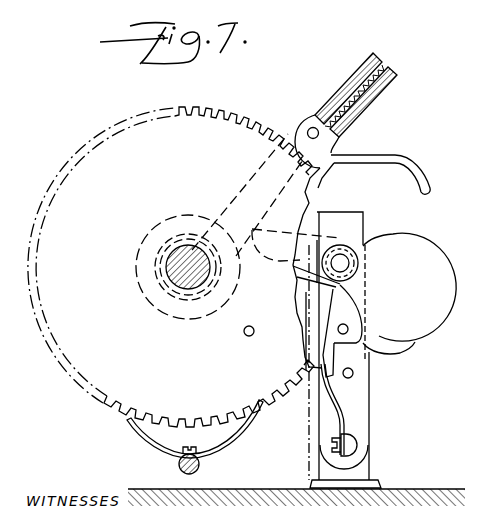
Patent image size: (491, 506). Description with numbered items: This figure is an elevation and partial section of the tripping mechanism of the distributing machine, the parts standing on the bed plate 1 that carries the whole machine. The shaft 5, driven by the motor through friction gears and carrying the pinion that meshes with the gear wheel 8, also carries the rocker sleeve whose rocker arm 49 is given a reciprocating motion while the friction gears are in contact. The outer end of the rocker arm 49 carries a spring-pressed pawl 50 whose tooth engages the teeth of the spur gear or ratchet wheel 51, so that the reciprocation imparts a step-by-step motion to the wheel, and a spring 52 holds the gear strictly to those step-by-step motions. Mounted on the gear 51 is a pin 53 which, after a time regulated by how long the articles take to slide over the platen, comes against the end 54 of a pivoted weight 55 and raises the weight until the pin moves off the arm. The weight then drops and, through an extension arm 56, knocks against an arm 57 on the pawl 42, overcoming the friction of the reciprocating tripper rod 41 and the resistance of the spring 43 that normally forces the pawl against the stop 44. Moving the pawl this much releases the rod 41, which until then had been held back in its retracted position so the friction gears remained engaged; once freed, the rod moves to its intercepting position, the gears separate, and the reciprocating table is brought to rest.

The bed plate 1 is at (438, 478).
The shaft 5 is at (166, 264).
The gear wheel 8 is at (340, 262).
The reciprocating tripper rod 41 is at (349, 329).
The pawl 42 is at (324, 310).
The spring 43 is at (341, 419).
The stop 44 is at (354, 374).
The rocker arm 49 is at (295, 136).
The spring-pressed pawl 50 is at (333, 153).
The spur gear or ratchet wheel 51 is at (187, 114).
The spring 52 is at (234, 442).
The pin 53 is at (244, 337).
The end of pivoted weight 54 is at (318, 230).
The pivoted weight 55 is at (409, 287).
The extension arm 56 is at (383, 348).
The arm on the pawl 57 is at (315, 351).